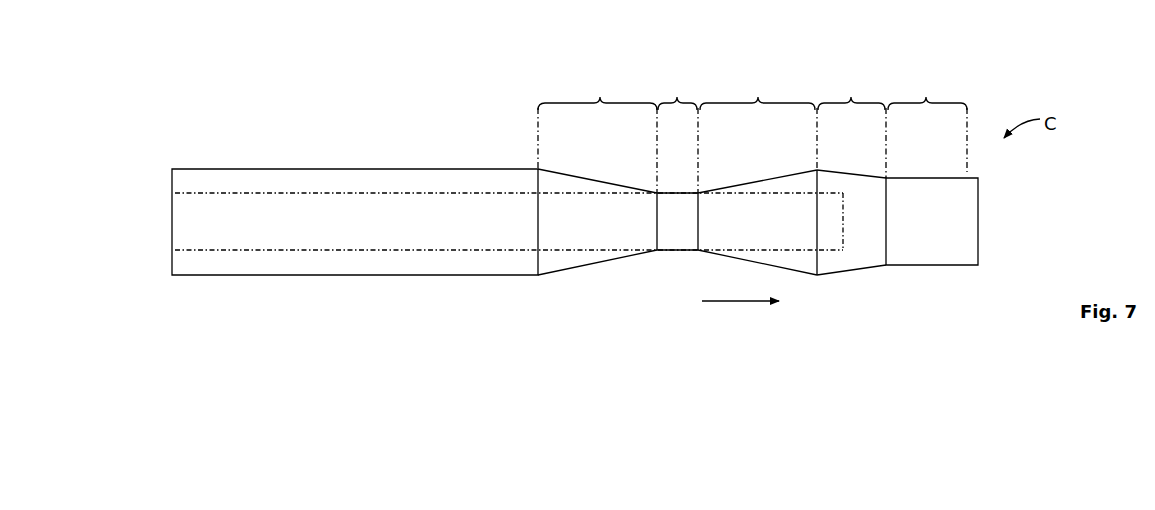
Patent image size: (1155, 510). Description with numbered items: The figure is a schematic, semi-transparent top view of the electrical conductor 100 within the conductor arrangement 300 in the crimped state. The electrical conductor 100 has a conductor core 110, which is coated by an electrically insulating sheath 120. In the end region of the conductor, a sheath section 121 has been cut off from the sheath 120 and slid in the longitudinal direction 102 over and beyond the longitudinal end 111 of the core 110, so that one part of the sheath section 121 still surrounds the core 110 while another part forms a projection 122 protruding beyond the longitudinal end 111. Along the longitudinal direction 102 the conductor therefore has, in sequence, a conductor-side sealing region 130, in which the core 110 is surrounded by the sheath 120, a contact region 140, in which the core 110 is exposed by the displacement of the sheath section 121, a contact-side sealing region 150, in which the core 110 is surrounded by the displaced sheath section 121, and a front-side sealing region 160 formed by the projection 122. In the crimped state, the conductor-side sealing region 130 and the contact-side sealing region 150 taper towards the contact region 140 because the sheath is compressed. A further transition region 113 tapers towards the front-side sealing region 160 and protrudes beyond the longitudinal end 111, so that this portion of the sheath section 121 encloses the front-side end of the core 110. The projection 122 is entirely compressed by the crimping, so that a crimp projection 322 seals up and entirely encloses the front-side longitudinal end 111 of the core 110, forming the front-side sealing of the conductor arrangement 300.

The conductor arrangement 300 is at (219, 70).
The electrical conductor 100 is at (313, 167).
The sheath 120 is at (360, 277).
The conductor-side sealing region 130 is at (600, 97).
The contact region 140 is at (677, 97).
The conductor core 110 is at (678, 252).
The contact-side sealing region 150 is at (758, 97).
The sheath section 121 is at (833, 276).
The longitudinal end of the core 111 is at (850, 243).
The further transition region 113 is at (851, 97).
The front-side sealing region 160 is at (926, 97).
The projection 122 is at (985, 221).
The crimp projection 322 is at (978, 222).
The longitudinal direction 102 is at (735, 303).